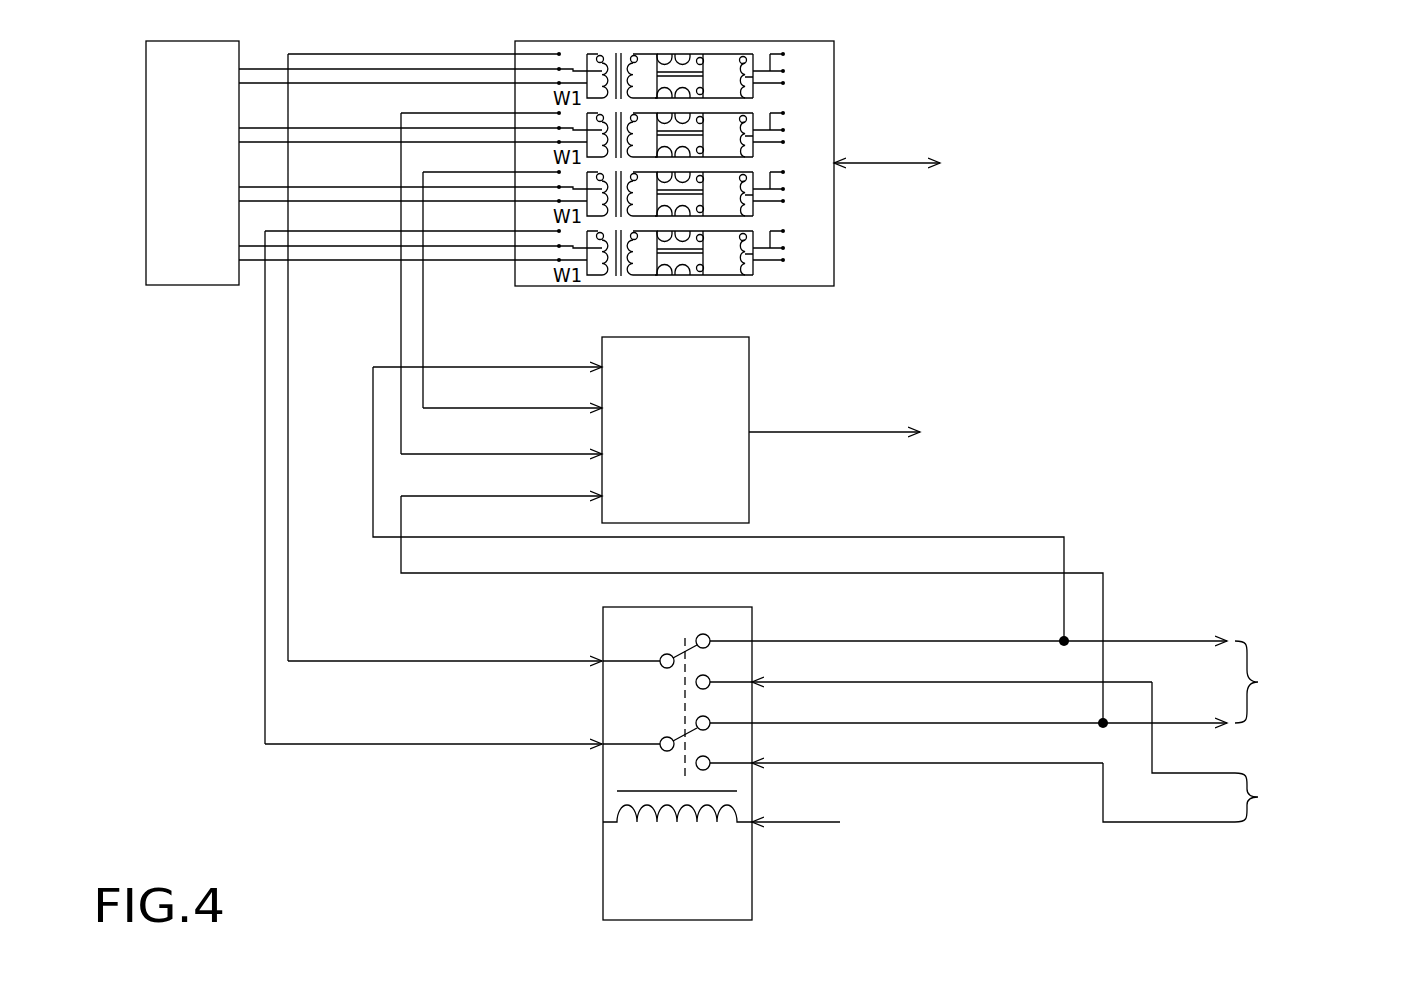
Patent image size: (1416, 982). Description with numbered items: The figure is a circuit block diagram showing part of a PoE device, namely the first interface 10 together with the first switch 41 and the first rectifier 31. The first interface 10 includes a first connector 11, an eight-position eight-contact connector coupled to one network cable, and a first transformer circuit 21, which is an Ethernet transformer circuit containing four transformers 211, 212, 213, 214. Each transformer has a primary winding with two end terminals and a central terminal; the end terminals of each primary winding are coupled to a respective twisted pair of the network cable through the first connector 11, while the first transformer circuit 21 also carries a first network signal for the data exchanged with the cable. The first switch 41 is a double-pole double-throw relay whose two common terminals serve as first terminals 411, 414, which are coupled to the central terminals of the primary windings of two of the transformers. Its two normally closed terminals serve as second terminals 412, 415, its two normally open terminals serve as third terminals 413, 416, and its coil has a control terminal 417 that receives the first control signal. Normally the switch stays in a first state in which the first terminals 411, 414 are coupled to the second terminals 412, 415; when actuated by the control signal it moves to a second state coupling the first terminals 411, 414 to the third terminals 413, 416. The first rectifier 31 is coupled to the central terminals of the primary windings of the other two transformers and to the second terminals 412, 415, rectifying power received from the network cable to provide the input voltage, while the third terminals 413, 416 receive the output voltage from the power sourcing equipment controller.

The first interface 10 is at (232, 320).
The first connector 11 is at (146, 164).
The first transformer circuit 21 is at (758, 165).
The transformer 211 is at (626, 50).
The transformer 212 is at (655, 107).
The transformer 213 is at (657, 219).
The transformer 214 is at (624, 278).
The first rectifier 31 is at (749, 362).
The first switch 41 is at (750, 757).
The first terminal 411 is at (600, 657).
The second terminal 412 is at (754, 639).
The third terminal 413 is at (754, 680).
The first terminal 414 is at (600, 750).
The second terminal 415 is at (754, 721).
The third terminal 416 is at (754, 761).
The control terminal 417 is at (753, 827).